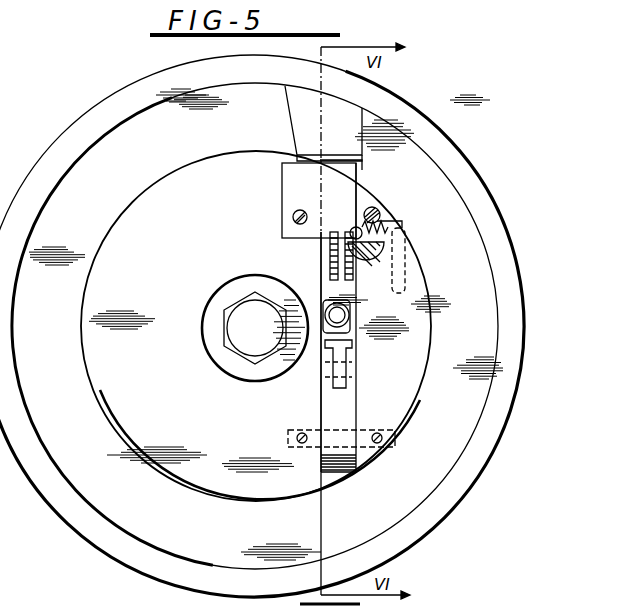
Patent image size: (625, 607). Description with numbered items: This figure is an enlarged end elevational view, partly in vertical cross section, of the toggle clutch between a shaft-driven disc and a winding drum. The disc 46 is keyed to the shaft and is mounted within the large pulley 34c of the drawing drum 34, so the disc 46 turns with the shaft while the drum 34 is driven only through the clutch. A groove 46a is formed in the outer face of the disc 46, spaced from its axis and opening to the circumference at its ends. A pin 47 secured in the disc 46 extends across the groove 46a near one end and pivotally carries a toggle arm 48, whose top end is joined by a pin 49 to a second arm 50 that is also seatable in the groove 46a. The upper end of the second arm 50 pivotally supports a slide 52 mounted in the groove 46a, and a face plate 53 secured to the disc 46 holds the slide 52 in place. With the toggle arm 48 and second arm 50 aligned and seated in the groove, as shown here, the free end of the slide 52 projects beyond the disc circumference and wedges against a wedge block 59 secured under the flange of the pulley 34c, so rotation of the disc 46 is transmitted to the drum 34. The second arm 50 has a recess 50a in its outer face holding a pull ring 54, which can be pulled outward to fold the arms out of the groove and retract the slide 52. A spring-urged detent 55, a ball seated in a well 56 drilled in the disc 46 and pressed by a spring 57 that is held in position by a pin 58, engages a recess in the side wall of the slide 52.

The drawing drum 34 is at (91, 110).
The large pulley 34c is at (52, 164).
The disc 46 is at (158, 186).
The groove 46a is at (344, 478).
The pin 47 is at (300, 430).
The toggle arm 48 is at (321, 398).
The pin 49 is at (358, 366).
The second arm 50 is at (355, 303).
The recess 50a is at (350, 326).
The slide 52 is at (358, 172).
The face plate 53 is at (282, 203).
The pull ring 54 is at (325, 302).
The spring-urged detent 55 is at (352, 229).
The well 56 is at (388, 258).
The spring 57 is at (398, 222).
The pin 58 is at (405, 232).
The wedge block 59 is at (293, 112).